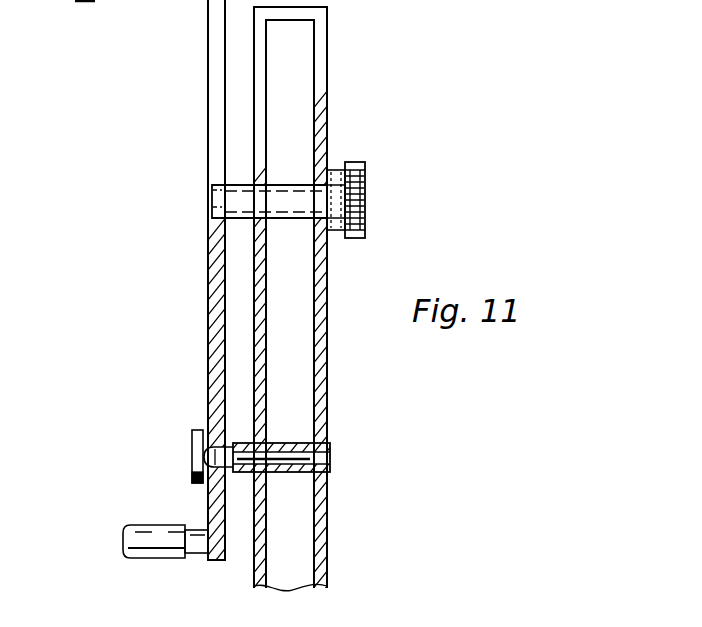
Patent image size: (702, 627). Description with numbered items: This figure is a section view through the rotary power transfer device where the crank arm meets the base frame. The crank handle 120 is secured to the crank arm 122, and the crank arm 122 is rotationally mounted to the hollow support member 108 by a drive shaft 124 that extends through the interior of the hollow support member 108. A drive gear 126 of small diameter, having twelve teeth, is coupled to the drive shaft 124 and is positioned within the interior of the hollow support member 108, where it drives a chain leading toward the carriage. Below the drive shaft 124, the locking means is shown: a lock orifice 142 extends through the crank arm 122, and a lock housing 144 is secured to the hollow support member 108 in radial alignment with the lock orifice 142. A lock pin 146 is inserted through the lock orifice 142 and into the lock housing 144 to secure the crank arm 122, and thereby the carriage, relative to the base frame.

The hollow support member 108 is at (328, 30).
The crank handle 120 is at (123, 543).
The crank arm 122 is at (218, 278).
The drive shaft 124 is at (293, 210).
The drive gear 126 is at (365, 170).
The lock orifice 142 is at (192, 450).
The lock housing 144 is at (297, 440).
The lock pin 146 is at (203, 465).